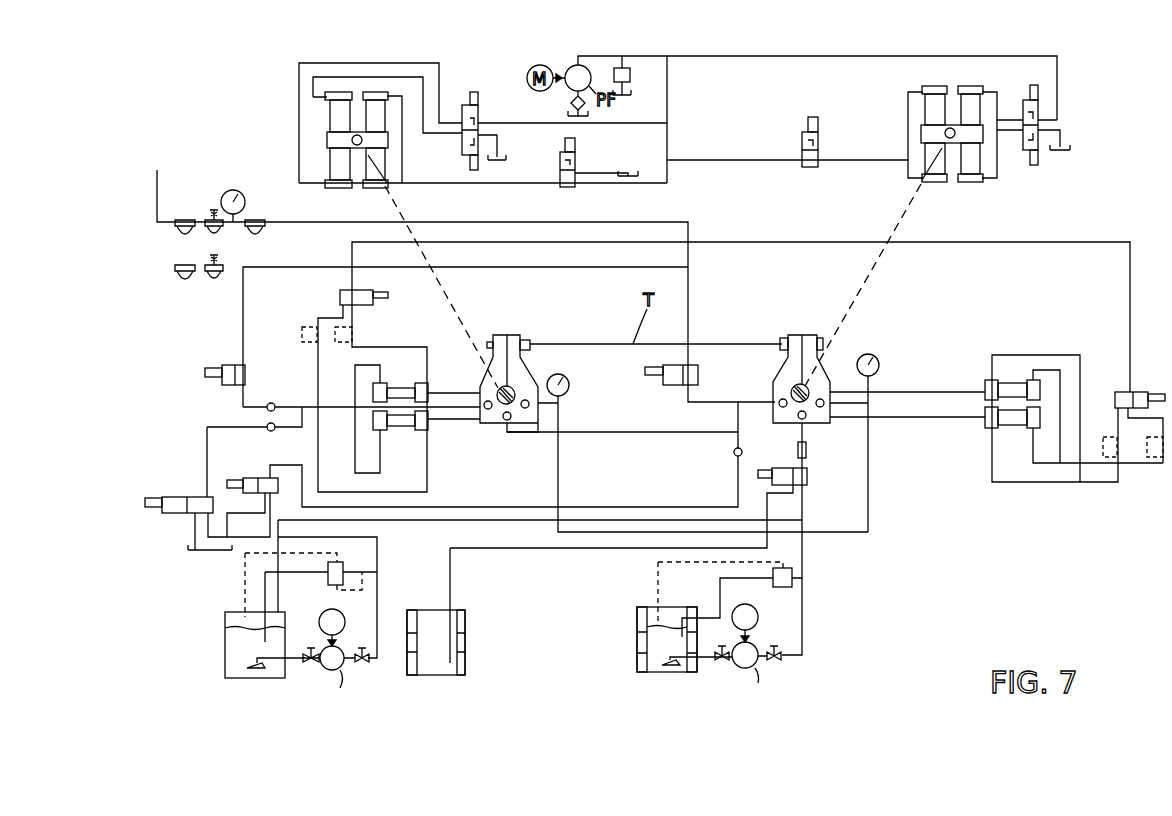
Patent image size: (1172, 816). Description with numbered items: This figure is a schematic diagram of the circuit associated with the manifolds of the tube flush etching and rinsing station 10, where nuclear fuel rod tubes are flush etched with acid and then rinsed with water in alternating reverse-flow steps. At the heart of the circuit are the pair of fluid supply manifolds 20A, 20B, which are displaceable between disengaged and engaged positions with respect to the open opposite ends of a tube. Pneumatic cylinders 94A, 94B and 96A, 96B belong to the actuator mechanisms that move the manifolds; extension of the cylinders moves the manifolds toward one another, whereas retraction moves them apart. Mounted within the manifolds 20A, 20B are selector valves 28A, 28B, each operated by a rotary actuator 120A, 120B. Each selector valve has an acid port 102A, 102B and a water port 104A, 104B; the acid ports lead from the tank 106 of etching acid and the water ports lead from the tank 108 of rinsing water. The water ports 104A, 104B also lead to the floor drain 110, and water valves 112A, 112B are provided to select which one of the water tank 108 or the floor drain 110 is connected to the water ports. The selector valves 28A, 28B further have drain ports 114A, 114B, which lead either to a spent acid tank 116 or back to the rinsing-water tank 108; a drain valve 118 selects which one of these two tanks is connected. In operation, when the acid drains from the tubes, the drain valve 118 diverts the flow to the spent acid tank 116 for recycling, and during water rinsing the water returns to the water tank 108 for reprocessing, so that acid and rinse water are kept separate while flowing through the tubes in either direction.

The tube flush etching and rinsing station 10 is at (1099, 103).
The rotary actuator 120B is at (327, 123).
The rotary actuator 120A is at (980, 158).
The fluid supply manifold 20B is at (532, 396).
The pneumatic cylinder 96B is at (528, 340).
The selector valve 28B is at (513, 391).
The water port 104B is at (487, 409).
The acid port 102B is at (528, 408).
The drain port 114B is at (510, 420).
The pneumatic cylinder 94B is at (407, 383).
The fluid supply manifold 20A is at (814, 374).
The pneumatic cylinder 96A is at (781, 340).
The selector valve 28A is at (797, 401).
The water port 104A is at (779, 399).
The acid port 102A is at (822, 398).
The drain port 114A is at (805, 419).
The drain valve 118 is at (807, 478).
The pneumatic cylinder 94A is at (1013, 382).
The water valve 112A is at (250, 478).
The water valve 112B is at (197, 497).
The floor drain 110 is at (218, 552).
The rinsing water tank 108 is at (225, 653).
The spent acid tank 116 is at (467, 645).
The etching acid tank 106 is at (698, 662).